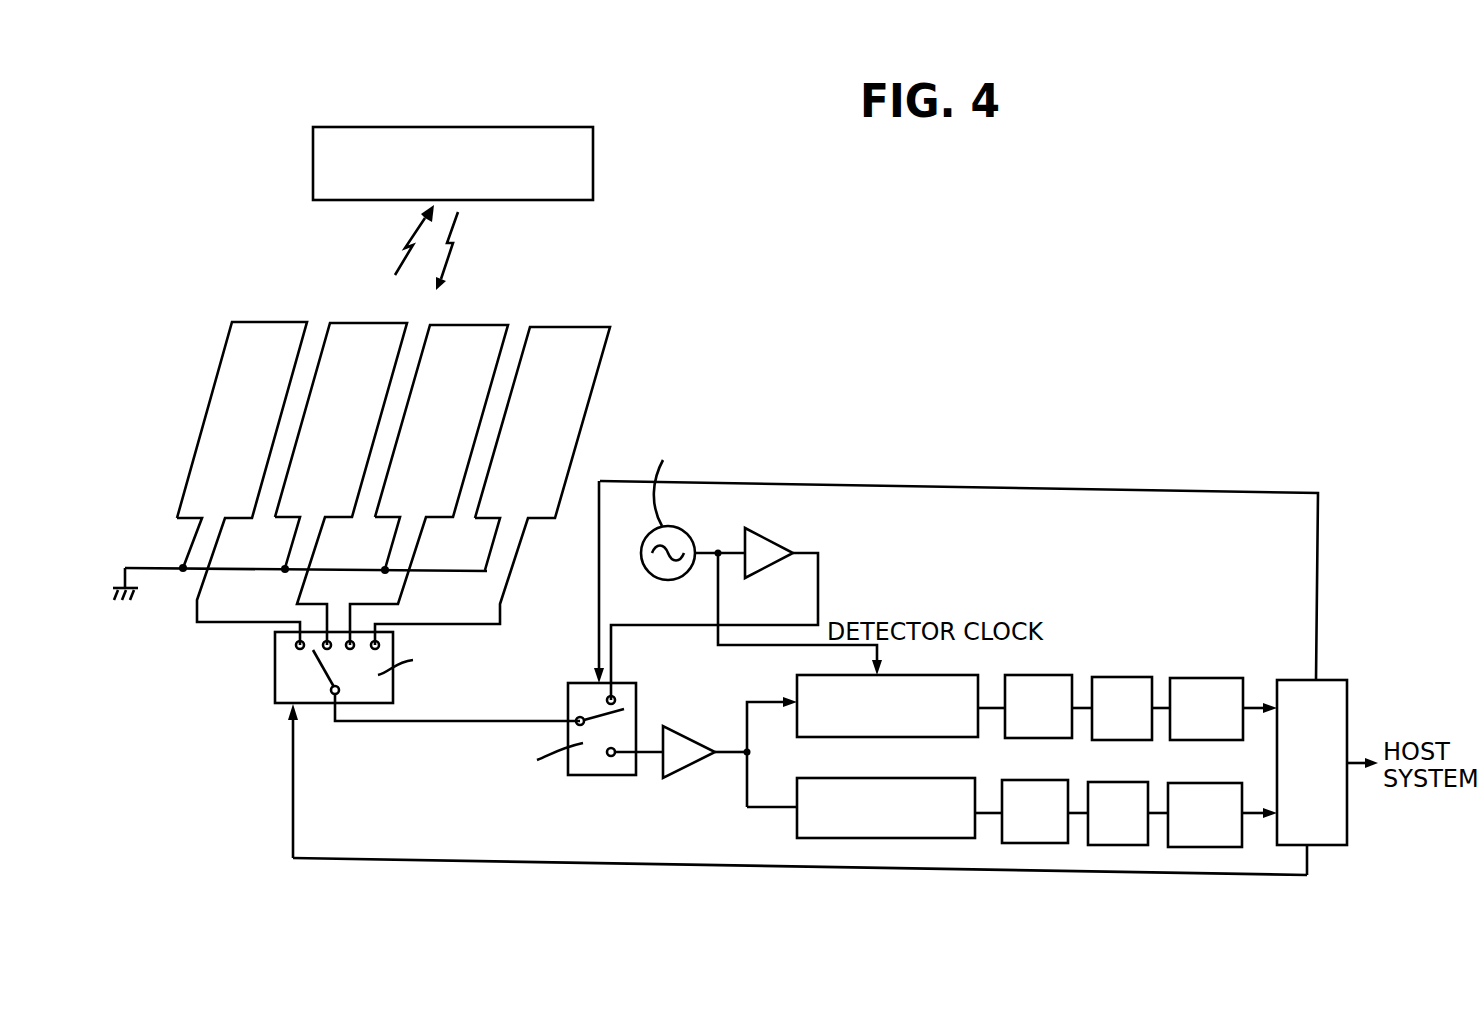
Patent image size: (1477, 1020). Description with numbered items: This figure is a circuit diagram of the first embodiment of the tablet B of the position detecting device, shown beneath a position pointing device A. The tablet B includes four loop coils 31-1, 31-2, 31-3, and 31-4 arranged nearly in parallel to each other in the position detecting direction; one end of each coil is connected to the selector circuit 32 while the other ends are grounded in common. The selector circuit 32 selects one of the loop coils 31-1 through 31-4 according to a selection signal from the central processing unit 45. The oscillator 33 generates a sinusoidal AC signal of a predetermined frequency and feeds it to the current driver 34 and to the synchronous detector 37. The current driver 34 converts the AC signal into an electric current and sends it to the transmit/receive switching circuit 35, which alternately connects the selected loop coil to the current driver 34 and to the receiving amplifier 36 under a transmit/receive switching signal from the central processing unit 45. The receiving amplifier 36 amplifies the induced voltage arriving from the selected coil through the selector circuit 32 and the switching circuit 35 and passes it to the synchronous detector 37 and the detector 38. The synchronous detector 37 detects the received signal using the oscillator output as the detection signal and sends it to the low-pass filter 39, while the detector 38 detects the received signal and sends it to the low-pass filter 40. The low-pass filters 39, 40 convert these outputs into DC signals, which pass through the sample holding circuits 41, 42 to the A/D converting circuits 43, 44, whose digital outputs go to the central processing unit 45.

The loop coil 31-1 is at (265, 322).
The loop coil 31-2 is at (388, 323).
The loop coil 31-3 is at (460, 325).
The loop coil 31-4 is at (590, 327).
The selector circuit 32 is at (274, 667).
The oscillator 33 is at (683, 526).
The current driver 34 is at (777, 538).
The transmit/receive switching circuit 35 is at (600, 776).
The receiving amplifier 36 is at (688, 767).
The synchronous detector 37 is at (797, 688).
The detector 38 is at (903, 778).
The low-pass filter 39 is at (1055, 675).
The low-pass filter 40 is at (1030, 760).
The sample holding circuit 41 is at (1137, 677).
The sample holding circuit 42 is at (1108, 782).
The A/D converting circuit 43 is at (1213, 678).
The A/D converting circuit 44 is at (1210, 760).
The central processing unit 45 is at (1337, 680).
The position pointing device A is at (498, 128).
The tablet B is at (943, 408).